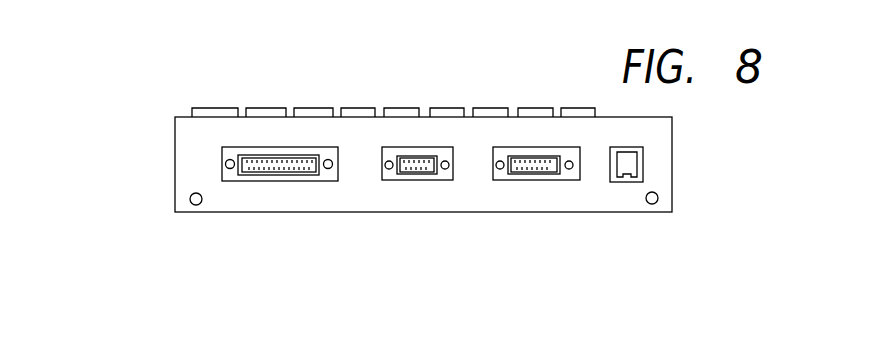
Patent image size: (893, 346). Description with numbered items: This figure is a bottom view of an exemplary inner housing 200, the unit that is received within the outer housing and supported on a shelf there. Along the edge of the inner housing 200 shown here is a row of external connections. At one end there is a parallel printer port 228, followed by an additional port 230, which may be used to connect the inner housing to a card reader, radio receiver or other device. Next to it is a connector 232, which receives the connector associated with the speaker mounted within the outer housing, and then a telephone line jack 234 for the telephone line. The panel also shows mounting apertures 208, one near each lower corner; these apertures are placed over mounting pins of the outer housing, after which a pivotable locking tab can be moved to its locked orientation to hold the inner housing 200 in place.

The inner housing 200 is at (163, 148).
The mounting aperture 208 is at (658, 198).
The parallel printer port 228 is at (280, 181).
The additional port 230 is at (417, 180).
The connector 232 is at (537, 180).
The telephone line jack 234 is at (646, 153).